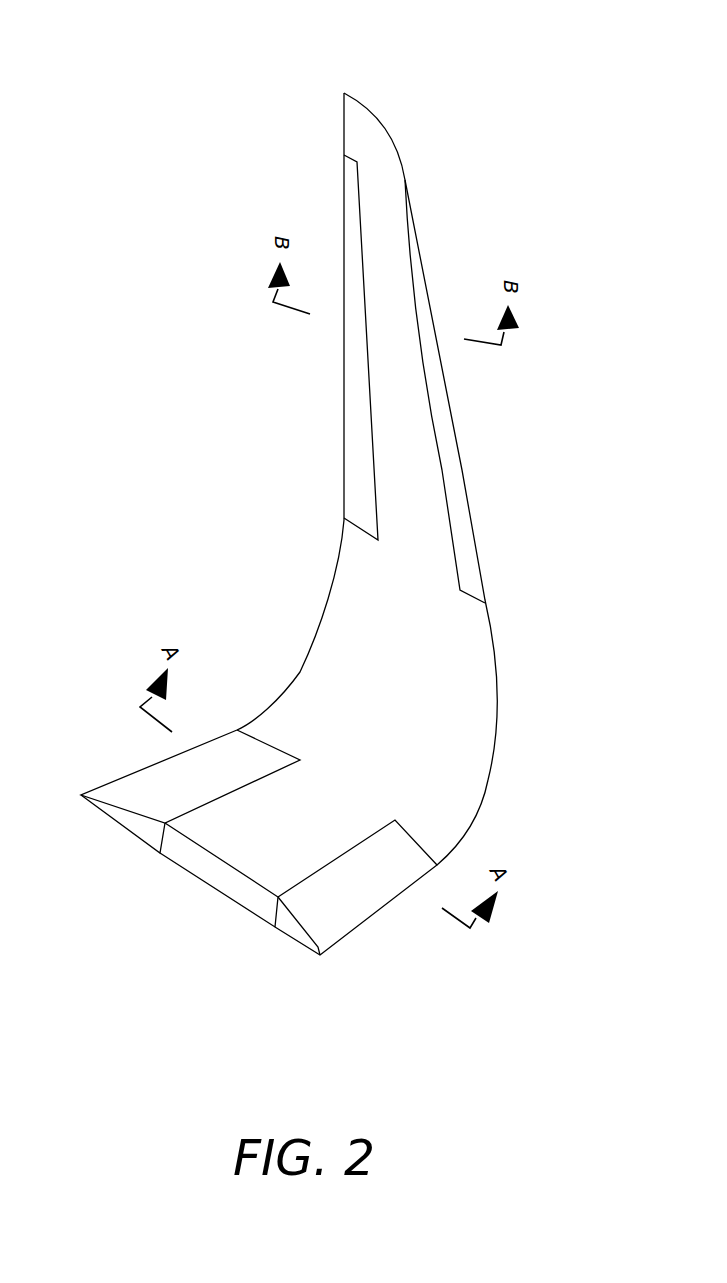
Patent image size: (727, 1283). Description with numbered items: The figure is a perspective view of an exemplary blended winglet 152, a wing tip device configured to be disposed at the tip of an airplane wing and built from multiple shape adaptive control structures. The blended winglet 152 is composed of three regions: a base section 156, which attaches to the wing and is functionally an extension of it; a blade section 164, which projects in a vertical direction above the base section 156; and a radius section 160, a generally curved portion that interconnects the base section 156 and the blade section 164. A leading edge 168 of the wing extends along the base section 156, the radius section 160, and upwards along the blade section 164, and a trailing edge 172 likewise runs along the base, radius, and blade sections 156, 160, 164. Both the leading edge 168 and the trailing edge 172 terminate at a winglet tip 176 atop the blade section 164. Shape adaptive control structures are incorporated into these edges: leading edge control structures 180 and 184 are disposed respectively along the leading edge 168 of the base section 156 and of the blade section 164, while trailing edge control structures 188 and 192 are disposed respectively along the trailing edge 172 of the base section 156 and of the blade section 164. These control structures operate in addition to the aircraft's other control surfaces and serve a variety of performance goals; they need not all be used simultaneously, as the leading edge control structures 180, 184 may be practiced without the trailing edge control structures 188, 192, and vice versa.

The blended winglet 152 is at (539, 49).
The base section 156 is at (250, 853).
The radius section 160 is at (410, 668).
The blade section 164 is at (380, 190).
The leading edge 168 is at (488, 782).
The trailing edge 172 is at (300, 672).
The winglet tip 176 is at (345, 93).
The leading edge control structure 180 is at (355, 915).
The leading edge control structure 184 is at (438, 405).
The trailing edge control structure 188 is at (142, 778).
The trailing edge control structure 192 is at (357, 407).